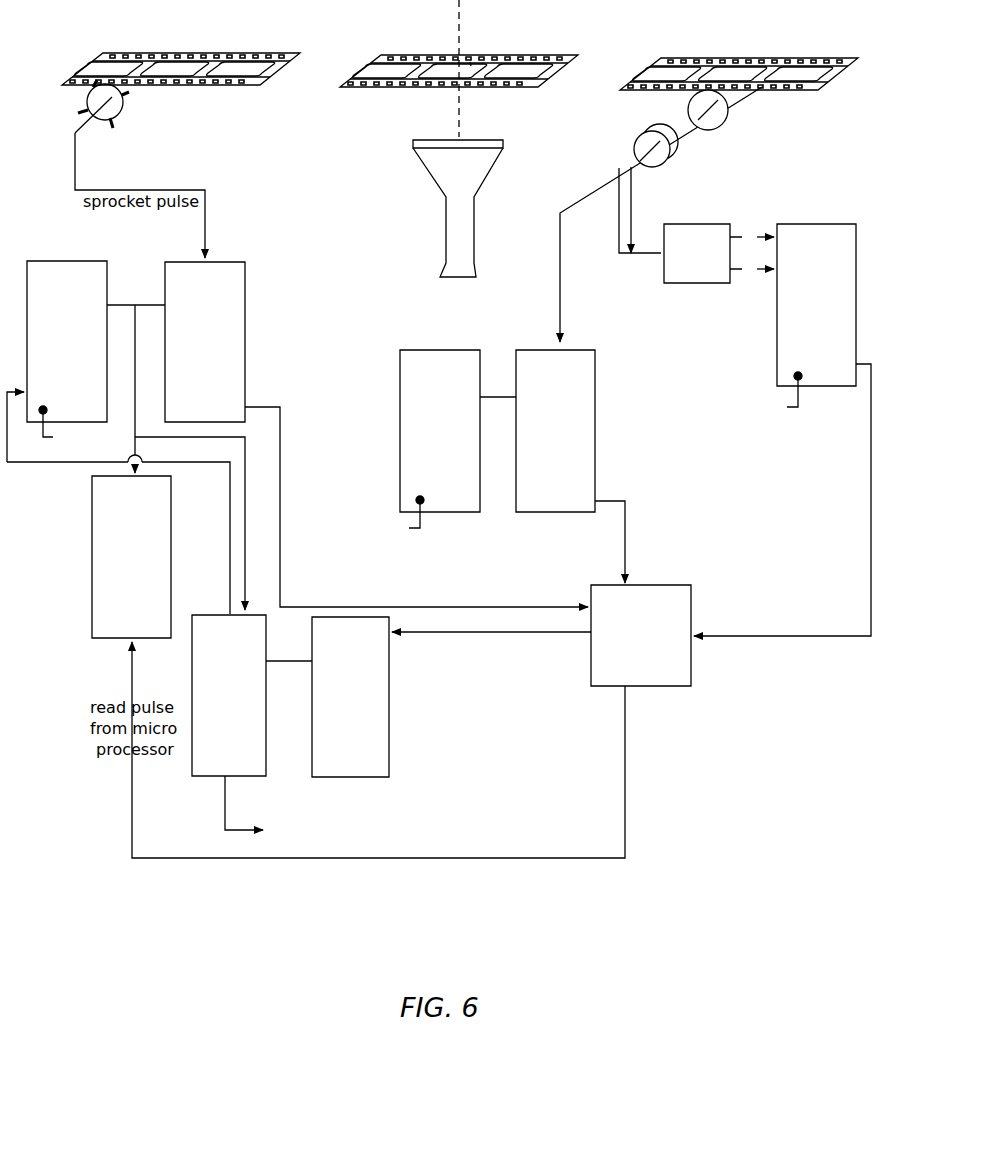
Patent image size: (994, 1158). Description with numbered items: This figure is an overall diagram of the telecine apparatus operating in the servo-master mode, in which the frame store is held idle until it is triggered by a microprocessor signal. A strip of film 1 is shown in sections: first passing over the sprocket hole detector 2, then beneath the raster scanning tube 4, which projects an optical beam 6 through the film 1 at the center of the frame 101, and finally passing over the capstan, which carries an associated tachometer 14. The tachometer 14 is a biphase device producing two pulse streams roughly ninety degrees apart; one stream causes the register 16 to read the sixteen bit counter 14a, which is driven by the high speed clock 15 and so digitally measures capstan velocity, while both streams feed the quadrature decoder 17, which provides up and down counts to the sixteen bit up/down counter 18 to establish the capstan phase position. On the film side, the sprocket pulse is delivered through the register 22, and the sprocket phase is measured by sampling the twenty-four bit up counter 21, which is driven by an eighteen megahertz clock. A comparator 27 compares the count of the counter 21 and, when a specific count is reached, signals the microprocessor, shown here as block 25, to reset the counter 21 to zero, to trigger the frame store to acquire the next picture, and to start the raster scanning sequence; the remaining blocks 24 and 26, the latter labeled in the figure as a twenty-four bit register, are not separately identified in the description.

The film 1 is at (250, 90).
The sprocket hole detector 2 is at (128, 107).
The raster scanning tube 4 is at (428, 175).
The optical beam 6 is at (446, 0).
The frame 101 is at (470, 62).
The tachometer 14 is at (655, 172).
The 16 bit counter 14a is at (460, 348).
The high speed clock 15 is at (725, 125).
The register 16 is at (540, 348).
The quadrature decoder 17 is at (696, 286).
The 16 bit up/down counter 18 is at (828, 224).
The 24 bit up counter 21 is at (70, 259).
The register 22 is at (188, 259).
The latch 24 is at (87, 520).
The microprocessor 25 is at (668, 584).
The 24 bit register 26 is at (382, 780).
The comparator 27 is at (250, 780).